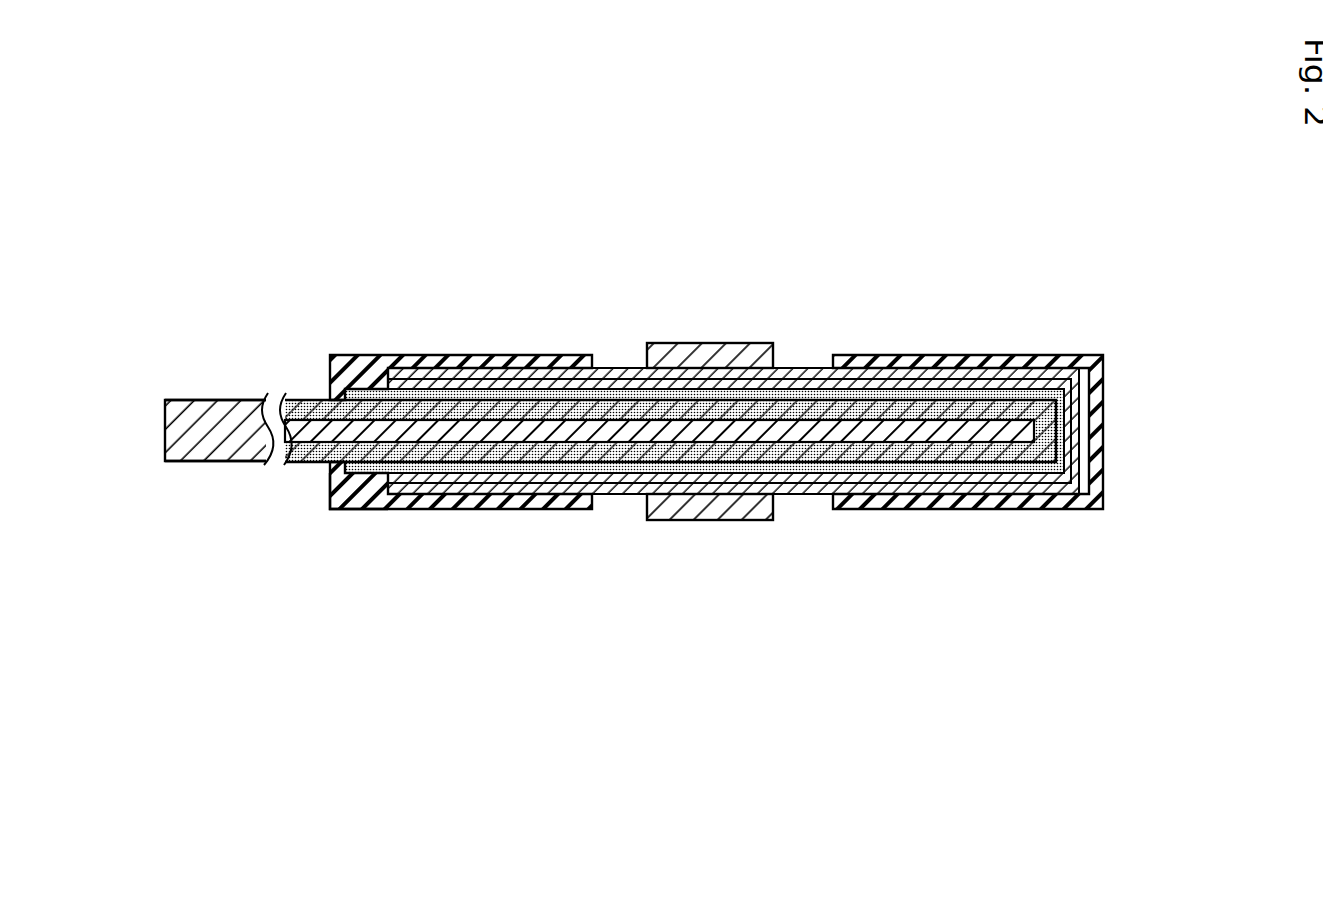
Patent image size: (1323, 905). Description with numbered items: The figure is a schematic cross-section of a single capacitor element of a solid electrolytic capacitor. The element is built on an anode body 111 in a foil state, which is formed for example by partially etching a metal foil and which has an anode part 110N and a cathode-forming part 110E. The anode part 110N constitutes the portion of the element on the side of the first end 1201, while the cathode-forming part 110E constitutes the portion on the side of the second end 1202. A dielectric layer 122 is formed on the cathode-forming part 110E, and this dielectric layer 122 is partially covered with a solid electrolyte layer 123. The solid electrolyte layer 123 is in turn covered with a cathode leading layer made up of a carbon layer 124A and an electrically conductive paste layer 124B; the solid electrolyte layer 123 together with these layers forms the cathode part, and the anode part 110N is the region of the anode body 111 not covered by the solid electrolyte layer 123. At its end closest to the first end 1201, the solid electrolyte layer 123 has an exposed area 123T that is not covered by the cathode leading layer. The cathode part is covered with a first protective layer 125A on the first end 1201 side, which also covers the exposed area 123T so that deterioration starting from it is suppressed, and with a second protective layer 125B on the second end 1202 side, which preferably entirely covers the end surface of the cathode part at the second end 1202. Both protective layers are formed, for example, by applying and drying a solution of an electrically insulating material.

The anode body 111 is at (165, 433).
The anode part 110N is at (215, 457).
The cathode-forming part 110E is at (796, 437).
The dielectric layer 122 is at (320, 463).
The solid electrolyte layer 123 is at (1060, 392).
The exposed area 123T is at (370, 497).
The carbon layer 124A is at (820, 370).
The electrically conductive paste layer 124B is at (625, 370).
The first protective layer 125A is at (363, 357).
The second protective layer 125B is at (955, 510).
The first end 1201 is at (157, 398).
The second end 1202 is at (1124, 428).